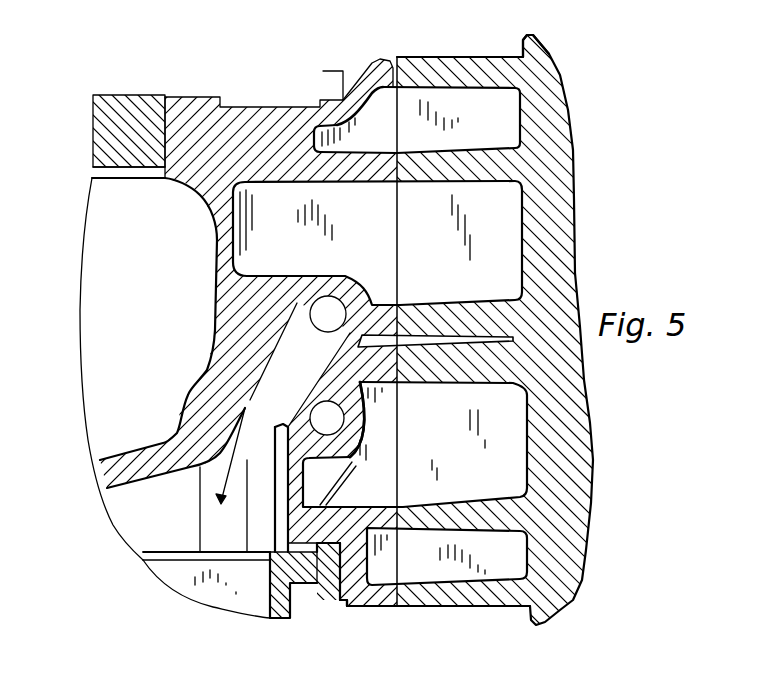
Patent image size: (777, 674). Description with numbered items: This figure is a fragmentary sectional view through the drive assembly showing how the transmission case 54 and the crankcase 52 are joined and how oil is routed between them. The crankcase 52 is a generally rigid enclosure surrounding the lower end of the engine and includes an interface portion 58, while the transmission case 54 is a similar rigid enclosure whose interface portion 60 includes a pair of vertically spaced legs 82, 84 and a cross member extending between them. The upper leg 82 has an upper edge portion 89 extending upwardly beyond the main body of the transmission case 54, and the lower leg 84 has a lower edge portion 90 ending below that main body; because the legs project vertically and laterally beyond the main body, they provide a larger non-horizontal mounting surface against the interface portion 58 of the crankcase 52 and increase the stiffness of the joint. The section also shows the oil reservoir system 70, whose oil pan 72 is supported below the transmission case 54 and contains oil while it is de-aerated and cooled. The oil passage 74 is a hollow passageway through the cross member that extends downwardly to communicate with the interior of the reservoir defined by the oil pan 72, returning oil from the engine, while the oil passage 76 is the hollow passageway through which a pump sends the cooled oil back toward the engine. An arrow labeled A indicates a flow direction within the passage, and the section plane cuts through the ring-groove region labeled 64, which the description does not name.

The crankcase 52 is at (535, 55).
The transmission case 54 is at (194, 88).
The interface portion 58 is at (459, 53).
The interface portion 60 is at (241, 115).
The ring groove 64 is at (388, 58).
The oil reservoir system 70 is at (88, 492).
The oil pan 72 is at (280, 617).
The oil passage 74 is at (302, 333).
The oil passage 76 is at (367, 427).
The leg 82 is at (372, 62).
The leg 84 is at (370, 607).
The upper edge portion 89 is at (323, 71).
The lower edge portion 90 is at (343, 607).
The flow path A is at (228, 486).